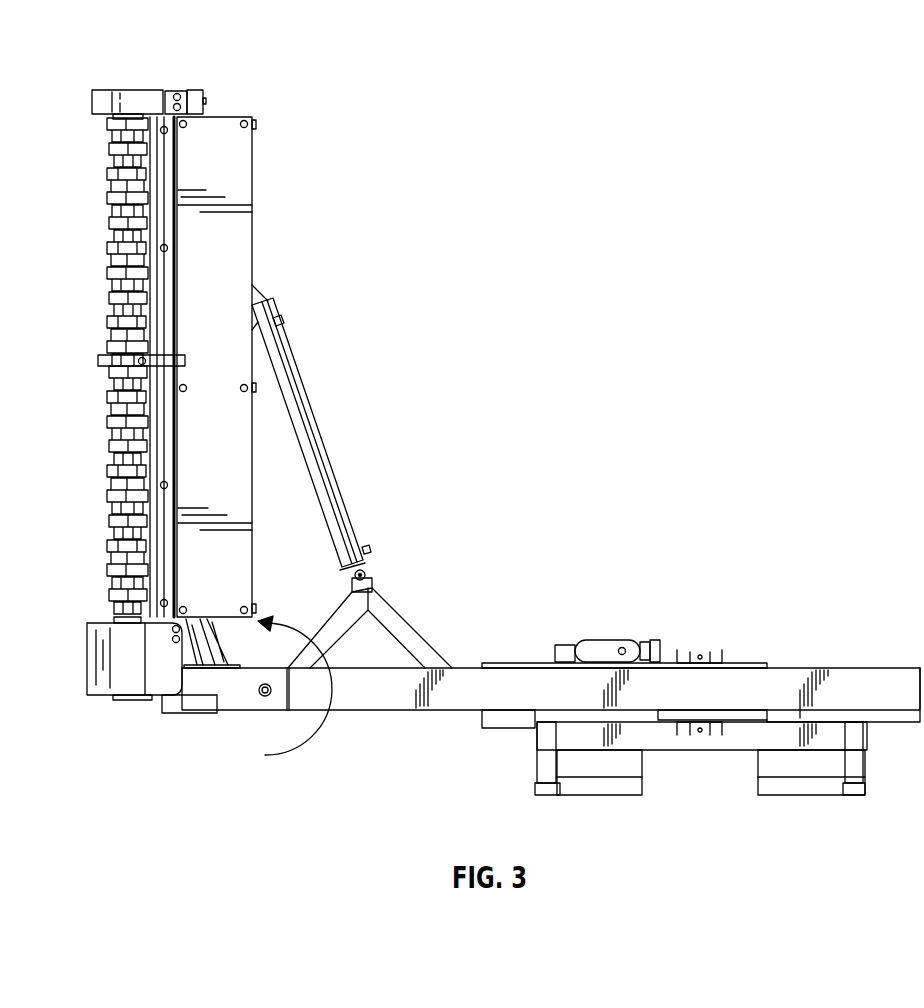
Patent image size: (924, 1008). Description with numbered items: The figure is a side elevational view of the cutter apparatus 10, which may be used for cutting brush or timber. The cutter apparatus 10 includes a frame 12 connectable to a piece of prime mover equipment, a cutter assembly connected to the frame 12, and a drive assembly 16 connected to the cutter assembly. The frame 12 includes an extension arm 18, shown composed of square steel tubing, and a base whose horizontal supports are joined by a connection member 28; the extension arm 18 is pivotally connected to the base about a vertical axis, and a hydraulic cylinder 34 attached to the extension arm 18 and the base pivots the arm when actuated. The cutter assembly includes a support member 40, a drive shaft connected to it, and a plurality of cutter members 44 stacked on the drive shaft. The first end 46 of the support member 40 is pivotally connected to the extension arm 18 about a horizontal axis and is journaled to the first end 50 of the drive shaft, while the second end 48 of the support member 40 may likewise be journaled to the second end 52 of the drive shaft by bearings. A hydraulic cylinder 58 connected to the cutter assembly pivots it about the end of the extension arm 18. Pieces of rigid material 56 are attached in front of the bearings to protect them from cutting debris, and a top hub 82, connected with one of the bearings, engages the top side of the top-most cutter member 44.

The cutter apparatus 10 is at (611, 402).
The frame 12 is at (868, 668).
The drive assembly 16 is at (132, 702).
The extension arm 18 is at (388, 712).
The connection member 28 is at (783, 666).
The hydraulic cylinder 34 is at (612, 640).
The support member 40 is at (204, 110).
The cutter members 44 is at (107, 233).
The first end of the support member 46 is at (210, 620).
The second end of the support member 48 is at (190, 90).
The first end of the drive shaft 50 is at (107, 612).
The second end of the drive shaft 52 is at (112, 116).
The pieces of rigid material 56 is at (92, 93).
The hydraulic cylinder 58 is at (312, 415).
The top hub 82 is at (254, 167).